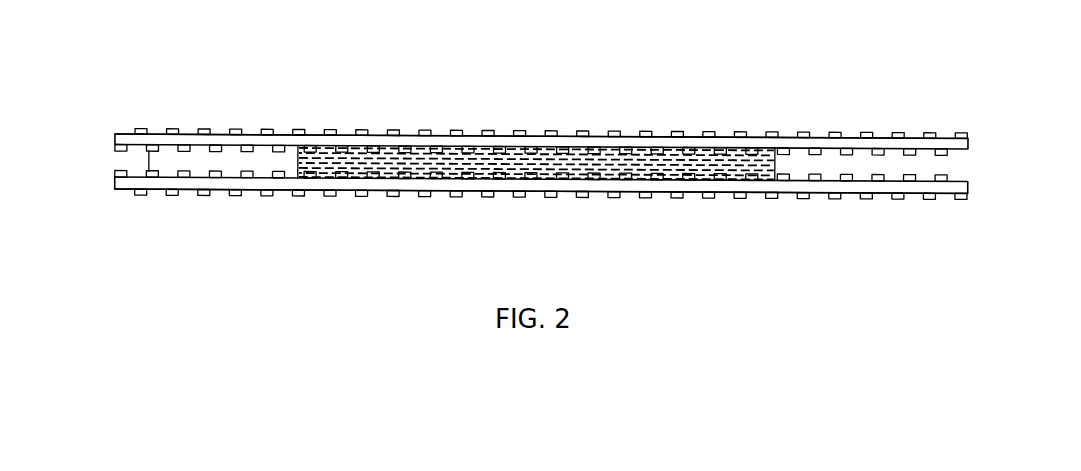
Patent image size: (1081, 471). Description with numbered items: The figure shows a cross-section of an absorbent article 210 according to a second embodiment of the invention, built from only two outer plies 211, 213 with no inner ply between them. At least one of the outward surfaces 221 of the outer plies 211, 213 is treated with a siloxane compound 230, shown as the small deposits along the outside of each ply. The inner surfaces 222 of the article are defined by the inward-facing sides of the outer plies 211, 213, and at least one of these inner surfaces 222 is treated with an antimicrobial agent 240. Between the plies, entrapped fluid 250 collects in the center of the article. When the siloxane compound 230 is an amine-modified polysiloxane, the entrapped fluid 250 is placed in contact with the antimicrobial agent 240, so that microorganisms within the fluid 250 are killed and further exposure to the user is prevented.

The absorbent article 210 is at (800, 58).
The outer ply 211 is at (968, 142).
The outer ply 213 is at (968, 190).
The outward surface 221 is at (820, 137).
The inner surface 222 is at (910, 151).
The siloxane compound 230 is at (269, 128).
The antimicrobial agent 240 is at (149, 151).
The entrapped fluid 250 is at (486, 163).